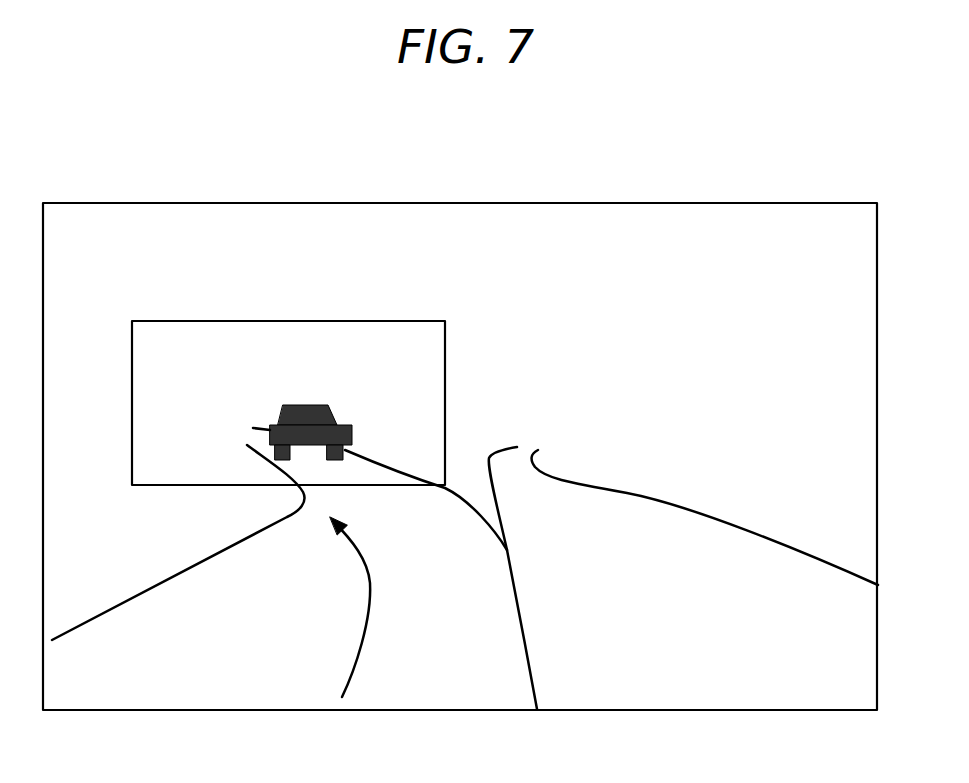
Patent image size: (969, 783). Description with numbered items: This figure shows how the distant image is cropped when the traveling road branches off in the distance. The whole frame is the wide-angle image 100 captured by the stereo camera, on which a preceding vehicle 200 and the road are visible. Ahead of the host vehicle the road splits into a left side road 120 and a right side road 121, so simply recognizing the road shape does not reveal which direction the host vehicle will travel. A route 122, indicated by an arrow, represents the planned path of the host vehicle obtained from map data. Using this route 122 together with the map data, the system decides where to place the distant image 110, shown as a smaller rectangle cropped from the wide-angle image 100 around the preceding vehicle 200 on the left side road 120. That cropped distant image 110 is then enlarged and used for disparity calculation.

The wide-angle image 100 is at (685, 202).
The distant image 110 is at (446, 390).
The preceding vehicle 200 is at (320, 403).
The left side road 120 is at (278, 537).
The right side road 121 is at (573, 519).
The route 122 is at (372, 583).